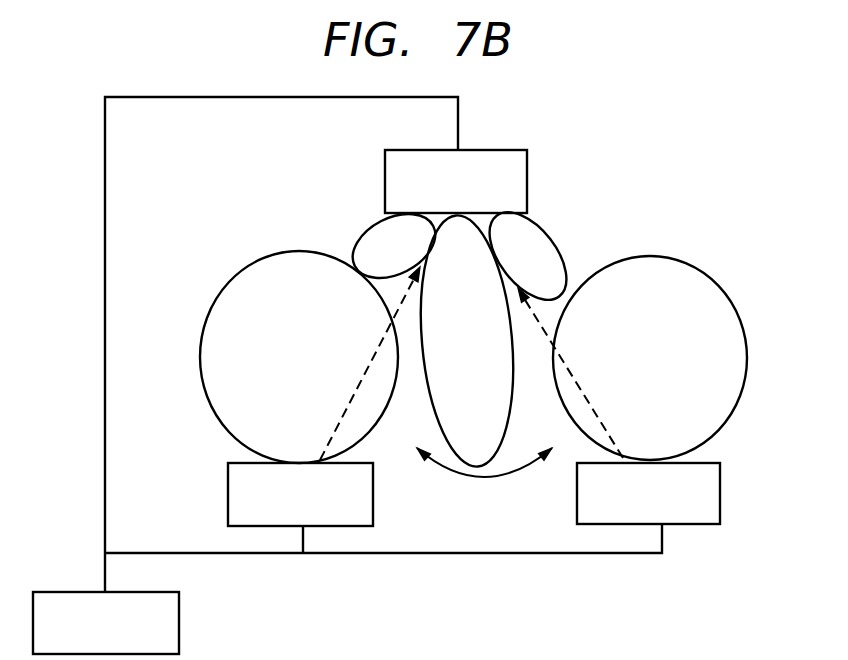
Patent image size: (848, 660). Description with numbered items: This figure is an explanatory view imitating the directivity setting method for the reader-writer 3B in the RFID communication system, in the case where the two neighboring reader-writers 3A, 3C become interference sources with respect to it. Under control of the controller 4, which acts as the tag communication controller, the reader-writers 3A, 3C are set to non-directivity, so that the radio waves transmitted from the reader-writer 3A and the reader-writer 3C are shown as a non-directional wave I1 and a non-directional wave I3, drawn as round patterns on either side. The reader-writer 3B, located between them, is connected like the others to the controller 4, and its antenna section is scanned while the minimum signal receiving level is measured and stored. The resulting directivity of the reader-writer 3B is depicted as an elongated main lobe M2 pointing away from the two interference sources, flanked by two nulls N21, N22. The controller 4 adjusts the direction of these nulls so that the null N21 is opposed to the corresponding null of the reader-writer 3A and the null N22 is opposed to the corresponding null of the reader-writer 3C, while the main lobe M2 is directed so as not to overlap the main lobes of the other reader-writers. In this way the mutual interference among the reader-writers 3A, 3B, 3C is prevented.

The reader-writer 3A is at (373, 489).
The reader-writer 3B is at (385, 185).
The reader-writer 3C is at (720, 492).
The controller 4 is at (181, 622).
The non-directional wave I1 is at (233, 278).
The non-directional wave I3 is at (680, 262).
The main lobe M2 is at (425, 368).
The null N21 is at (425, 256).
The null N22 is at (512, 275).